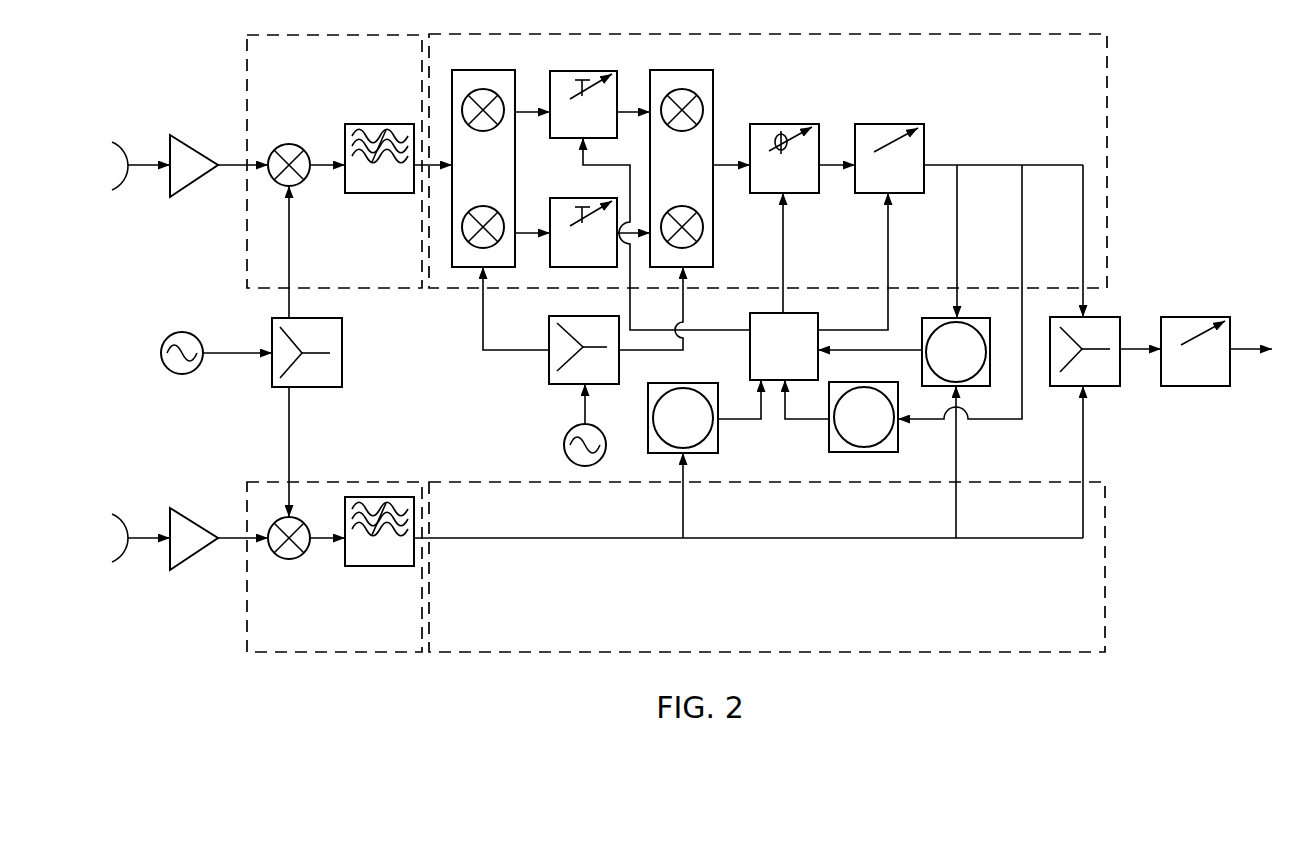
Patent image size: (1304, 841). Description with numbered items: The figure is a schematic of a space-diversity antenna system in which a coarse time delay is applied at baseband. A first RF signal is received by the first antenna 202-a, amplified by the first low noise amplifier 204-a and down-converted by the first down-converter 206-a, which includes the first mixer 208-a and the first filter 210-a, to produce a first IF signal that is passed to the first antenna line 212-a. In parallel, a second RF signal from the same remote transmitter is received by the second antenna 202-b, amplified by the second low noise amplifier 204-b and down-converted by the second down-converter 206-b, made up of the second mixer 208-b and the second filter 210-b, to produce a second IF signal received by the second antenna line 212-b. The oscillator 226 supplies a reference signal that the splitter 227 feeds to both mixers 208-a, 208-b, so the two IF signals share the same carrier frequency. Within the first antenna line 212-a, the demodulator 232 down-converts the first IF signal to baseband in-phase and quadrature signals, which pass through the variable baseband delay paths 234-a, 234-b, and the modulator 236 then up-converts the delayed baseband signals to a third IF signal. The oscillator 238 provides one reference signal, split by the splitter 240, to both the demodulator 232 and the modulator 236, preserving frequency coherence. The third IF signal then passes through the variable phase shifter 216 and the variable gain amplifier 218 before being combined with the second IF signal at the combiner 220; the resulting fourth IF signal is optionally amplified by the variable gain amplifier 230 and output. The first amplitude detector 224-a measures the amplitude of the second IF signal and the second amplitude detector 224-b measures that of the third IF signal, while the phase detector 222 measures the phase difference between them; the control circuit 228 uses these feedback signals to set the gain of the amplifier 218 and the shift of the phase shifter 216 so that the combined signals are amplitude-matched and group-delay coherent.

The first antenna 202-a is at (120, 130).
The second antenna 202-b is at (120, 505).
The first low noise amplifier 204-a is at (194, 166).
The second low noise amplifier 204-b is at (194, 539).
The first down-converter 206-a is at (334, 161).
The second down-converter 206-b is at (334, 567).
The first mixer 208-a is at (297, 147).
The second mixer 208-b is at (297, 556).
The first filter 210-a is at (379, 158).
The second filter 210-b is at (379, 531).
The first antenna line 212-a is at (768, 161).
The second antenna line 212-b is at (767, 567).
The variable phase shifter 216 is at (784, 158).
The variable gain amplifier 218 is at (889, 158).
The combiner 220 is at (1085, 351).
The phase detector 222 is at (956, 352).
The first amplitude detector 224-a is at (683, 418).
The second amplitude detector 224-b is at (863, 417).
The oscillator 226 is at (173, 333).
The splitter 227 is at (307, 352).
The control circuit 228 is at (784, 346).
The variable gain amplifier 230 is at (1195, 351).
The demodulator 232 is at (483, 168).
The variable baseband delay path 234-a is at (583, 104).
The variable baseband delay path 234-b is at (583, 232).
The modulator 236 is at (681, 168).
The oscillator 238 is at (567, 433).
The splitter 240 is at (584, 350).